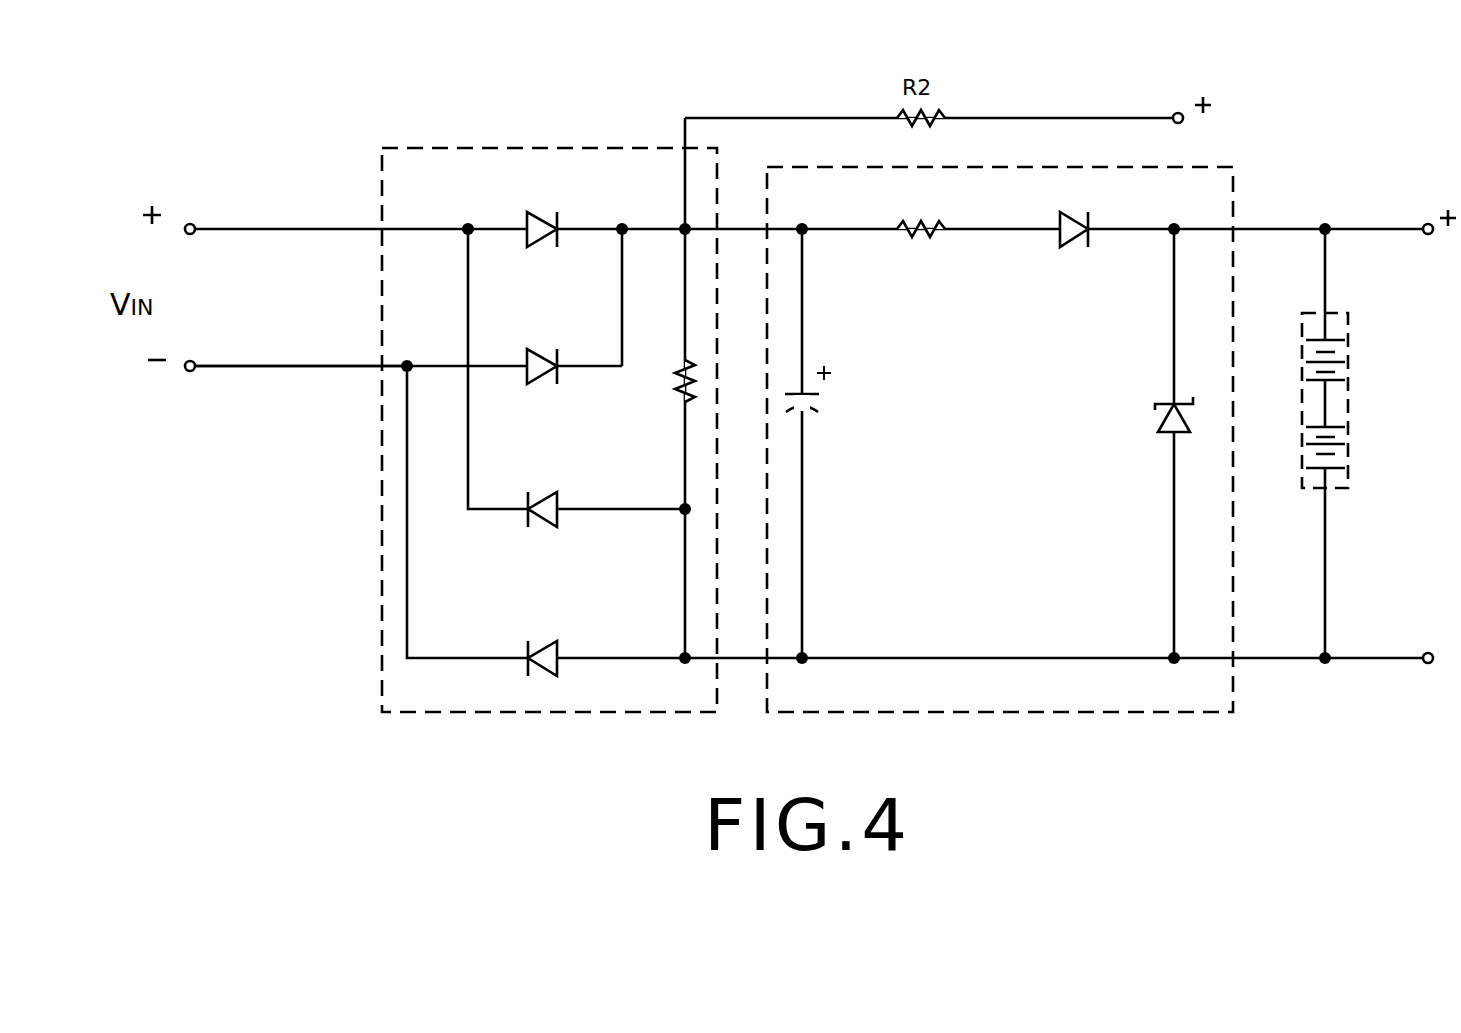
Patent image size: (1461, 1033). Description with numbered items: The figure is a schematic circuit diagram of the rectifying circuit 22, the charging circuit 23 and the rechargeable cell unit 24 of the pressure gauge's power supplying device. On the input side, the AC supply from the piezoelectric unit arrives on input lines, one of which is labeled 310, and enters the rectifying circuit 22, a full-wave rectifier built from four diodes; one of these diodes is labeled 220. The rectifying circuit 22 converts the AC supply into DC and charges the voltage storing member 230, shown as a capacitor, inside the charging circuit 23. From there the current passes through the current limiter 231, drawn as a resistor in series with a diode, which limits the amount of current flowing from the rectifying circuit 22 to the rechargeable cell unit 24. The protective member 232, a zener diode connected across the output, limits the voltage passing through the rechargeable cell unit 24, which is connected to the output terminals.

The rectifying circuit 22 is at (549, 402).
The diode D1 220 is at (560, 211).
The charging circuit 23 is at (1009, 420).
The voltage storing member 230 is at (812, 410).
The current limiter 231 is at (920, 242).
The protective member 232 is at (1152, 416).
The rechargeable cell unit 24 is at (1345, 443).
The input terminal line 310 is at (229, 368).